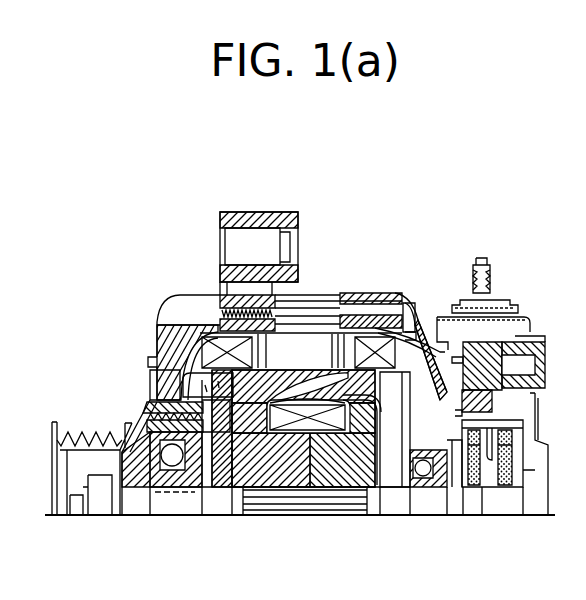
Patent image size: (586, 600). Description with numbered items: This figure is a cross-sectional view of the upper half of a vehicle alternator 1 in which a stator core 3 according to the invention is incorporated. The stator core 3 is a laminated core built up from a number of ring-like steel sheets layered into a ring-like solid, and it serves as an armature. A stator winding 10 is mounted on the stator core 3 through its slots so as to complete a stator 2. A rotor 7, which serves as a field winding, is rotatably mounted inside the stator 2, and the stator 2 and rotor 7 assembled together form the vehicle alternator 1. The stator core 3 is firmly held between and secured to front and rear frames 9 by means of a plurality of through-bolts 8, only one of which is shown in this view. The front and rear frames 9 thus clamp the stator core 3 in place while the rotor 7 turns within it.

The vehicle alternator 1 is at (501, 225).
The stator 2 is at (298, 336).
The stator core 3 is at (335, 343).
The rotor 7 is at (238, 388).
The through-bolts 8 is at (410, 310).
The front and rear frames 9 is at (220, 295).
The stator winding 10 is at (157, 327).